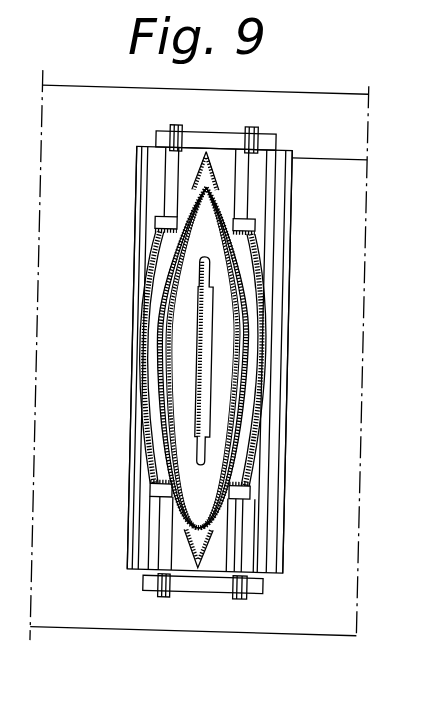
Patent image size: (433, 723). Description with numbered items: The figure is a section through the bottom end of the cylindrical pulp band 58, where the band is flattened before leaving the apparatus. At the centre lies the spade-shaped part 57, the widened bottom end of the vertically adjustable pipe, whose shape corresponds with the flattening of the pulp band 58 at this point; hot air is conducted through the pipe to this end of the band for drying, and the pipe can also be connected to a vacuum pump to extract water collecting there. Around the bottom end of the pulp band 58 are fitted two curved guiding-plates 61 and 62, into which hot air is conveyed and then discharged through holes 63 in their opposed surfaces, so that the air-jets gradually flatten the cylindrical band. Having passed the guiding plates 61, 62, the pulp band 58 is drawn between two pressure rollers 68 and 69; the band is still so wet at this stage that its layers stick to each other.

The spade-shaped part 57 is at (205, 408).
The pulp band 58 is at (207, 533).
The curved guiding-plate 61 is at (152, 334).
The curved guiding-plate 62 is at (253, 345).
The holes 63 is at (165, 276).
The pressure roller 68 is at (253, 563).
The pressure roller 69 is at (148, 550).